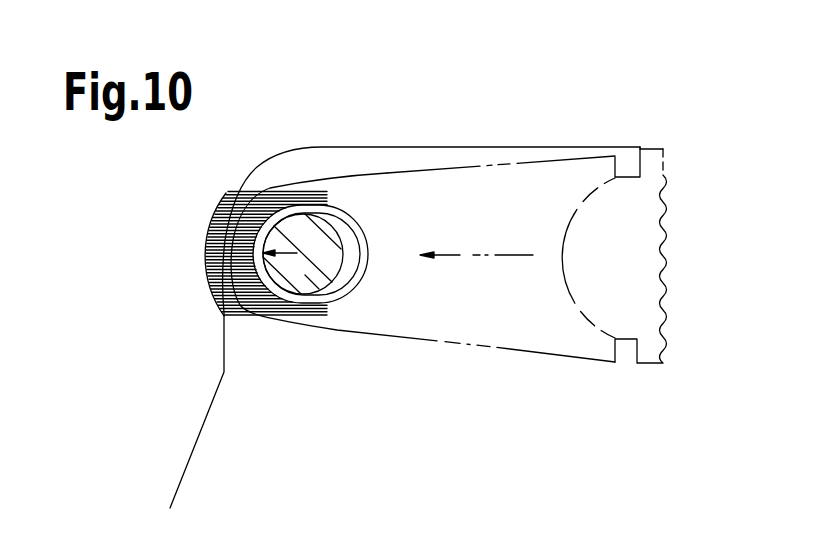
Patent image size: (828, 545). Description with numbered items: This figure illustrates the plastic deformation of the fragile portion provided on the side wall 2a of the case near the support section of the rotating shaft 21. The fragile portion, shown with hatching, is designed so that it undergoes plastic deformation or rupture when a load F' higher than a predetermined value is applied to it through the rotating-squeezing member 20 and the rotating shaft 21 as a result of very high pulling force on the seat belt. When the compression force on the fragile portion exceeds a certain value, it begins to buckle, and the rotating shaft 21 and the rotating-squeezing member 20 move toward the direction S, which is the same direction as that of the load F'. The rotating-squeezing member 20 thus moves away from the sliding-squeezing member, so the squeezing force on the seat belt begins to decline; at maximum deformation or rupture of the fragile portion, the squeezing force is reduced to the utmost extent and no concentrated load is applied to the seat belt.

The side wall 2a is at (401, 147).
The rotating-squeezing member 20 is at (413, 322).
The rotating shaft 21 is at (337, 231).
The direction S is at (476, 272).
The load F' is at (286, 267).